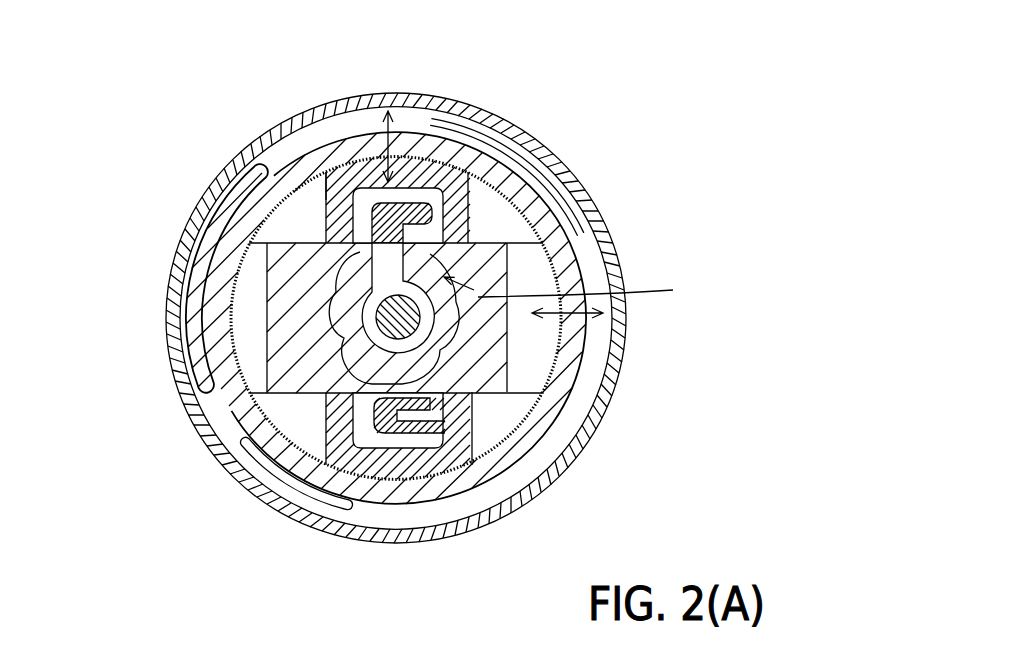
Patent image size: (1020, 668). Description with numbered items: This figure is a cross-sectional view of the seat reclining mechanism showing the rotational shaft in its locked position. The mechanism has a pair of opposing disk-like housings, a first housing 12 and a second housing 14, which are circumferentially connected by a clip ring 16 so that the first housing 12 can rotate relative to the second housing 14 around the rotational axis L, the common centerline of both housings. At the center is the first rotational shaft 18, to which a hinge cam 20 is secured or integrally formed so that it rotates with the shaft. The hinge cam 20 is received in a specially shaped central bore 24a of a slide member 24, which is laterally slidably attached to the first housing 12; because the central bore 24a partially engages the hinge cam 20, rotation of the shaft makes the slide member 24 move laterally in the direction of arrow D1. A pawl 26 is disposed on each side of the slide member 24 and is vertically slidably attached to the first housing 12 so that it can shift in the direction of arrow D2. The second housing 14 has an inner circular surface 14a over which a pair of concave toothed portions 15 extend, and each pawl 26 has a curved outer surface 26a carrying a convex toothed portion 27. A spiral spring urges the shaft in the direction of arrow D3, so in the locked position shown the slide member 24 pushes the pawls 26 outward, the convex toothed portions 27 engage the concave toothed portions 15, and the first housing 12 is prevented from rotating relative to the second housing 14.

The first housing 12 is at (580, 228).
The second housing 14 is at (287, 170).
The inner circular surface 14a is at (316, 197).
The concave toothed portion 15 is at (257, 218).
The clip ring 16 is at (578, 390).
The first rotational shaft 18 is at (330, 422).
The hinge cam 20 is at (335, 337).
The slide member 24 is at (470, 357).
The central bore 24a is at (340, 278).
The pawl 26 is at (472, 178).
The curved outer surface 26a is at (448, 130).
The convex toothed portion 27 is at (409, 140).
The arrow D1 is at (587, 332).
The arrow D2 is at (387, 130).
The arrow D3 is at (473, 273).
The rotational axis L is at (585, 278).